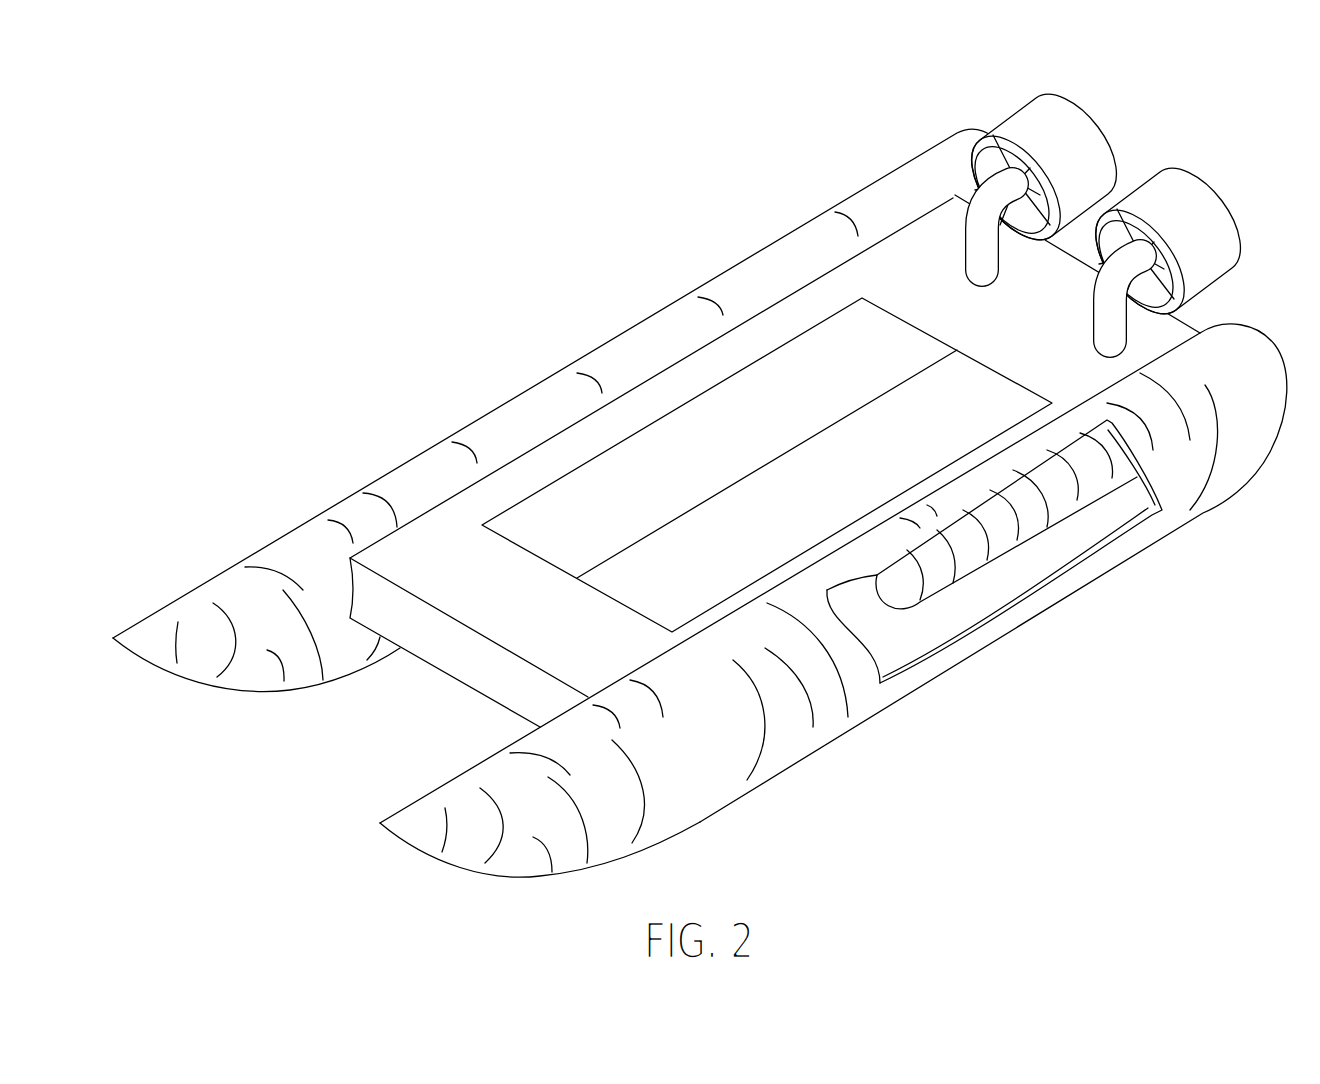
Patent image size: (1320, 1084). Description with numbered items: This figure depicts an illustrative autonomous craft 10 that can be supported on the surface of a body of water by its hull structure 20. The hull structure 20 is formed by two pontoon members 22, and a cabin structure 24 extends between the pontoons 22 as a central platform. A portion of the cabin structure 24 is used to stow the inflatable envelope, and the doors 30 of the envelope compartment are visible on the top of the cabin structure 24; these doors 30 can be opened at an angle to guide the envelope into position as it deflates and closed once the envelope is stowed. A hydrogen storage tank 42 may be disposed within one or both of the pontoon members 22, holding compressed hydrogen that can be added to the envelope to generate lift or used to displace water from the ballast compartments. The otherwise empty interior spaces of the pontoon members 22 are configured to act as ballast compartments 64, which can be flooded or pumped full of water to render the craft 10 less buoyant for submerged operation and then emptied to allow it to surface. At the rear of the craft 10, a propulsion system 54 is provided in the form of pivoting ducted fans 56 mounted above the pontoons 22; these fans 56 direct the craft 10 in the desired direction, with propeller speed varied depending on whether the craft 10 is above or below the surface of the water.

The craft 10 is at (703, 489).
The hull structure 20 is at (403, 442).
The pontoon members 22 is at (228, 690).
The cabin structure 24 is at (442, 672).
The doors 30 is at (730, 413).
The hydrogen storage tank 42 is at (980, 563).
The propulsion system 54 is at (1123, 191).
The pivoting ducted fans 56 is at (1086, 124).
The ballast compartments 64 is at (925, 637).